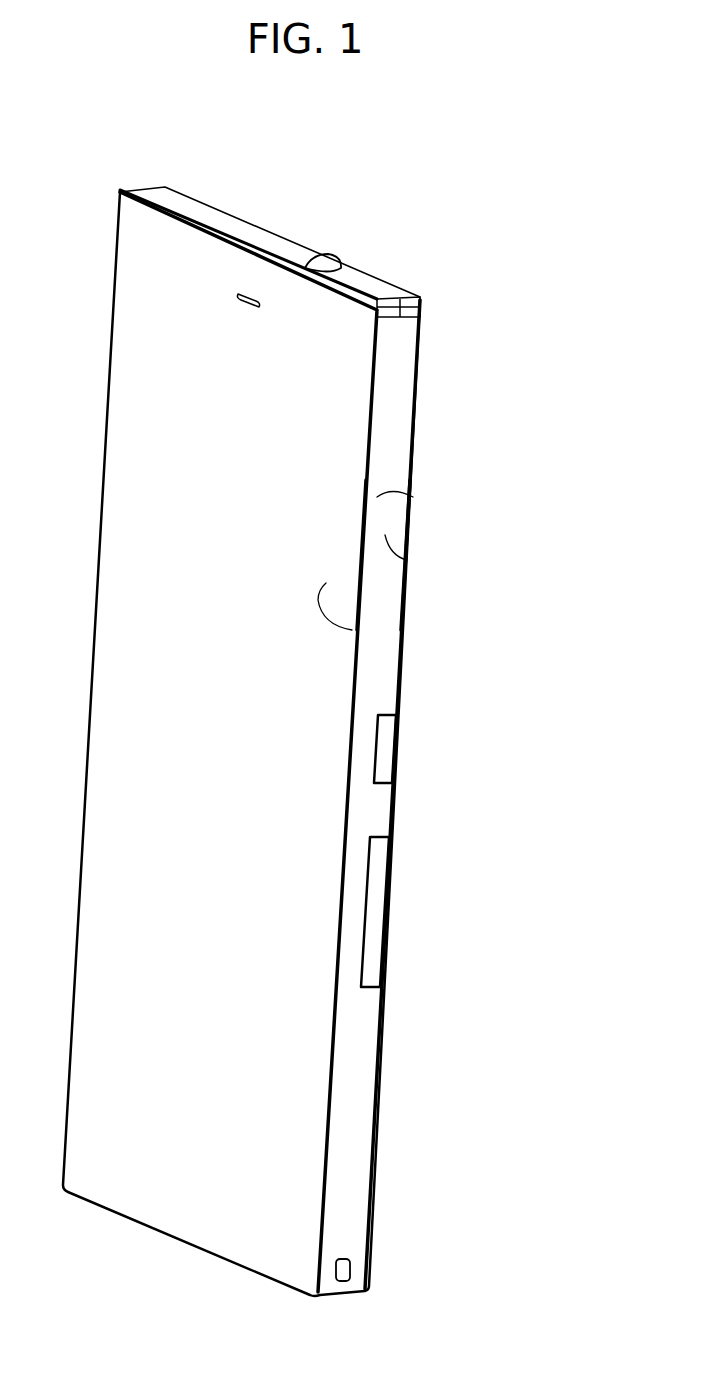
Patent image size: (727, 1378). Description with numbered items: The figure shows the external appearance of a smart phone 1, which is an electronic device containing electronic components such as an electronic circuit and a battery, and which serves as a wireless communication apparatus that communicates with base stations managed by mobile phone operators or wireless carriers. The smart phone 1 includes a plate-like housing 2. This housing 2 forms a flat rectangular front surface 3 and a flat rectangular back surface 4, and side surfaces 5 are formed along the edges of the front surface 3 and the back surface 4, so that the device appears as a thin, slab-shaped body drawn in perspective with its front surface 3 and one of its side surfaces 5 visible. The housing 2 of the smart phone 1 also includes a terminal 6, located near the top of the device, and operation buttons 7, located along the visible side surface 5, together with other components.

The smart phone 1 is at (503, 273).
The plate-like housing 2 is at (498, 480).
The front surface 3 is at (413, 497).
The back surface 4 is at (352, 630).
The side surfaces 5 is at (407, 560).
The terminal 6 is at (328, 252).
The operation buttons 7 is at (393, 770).